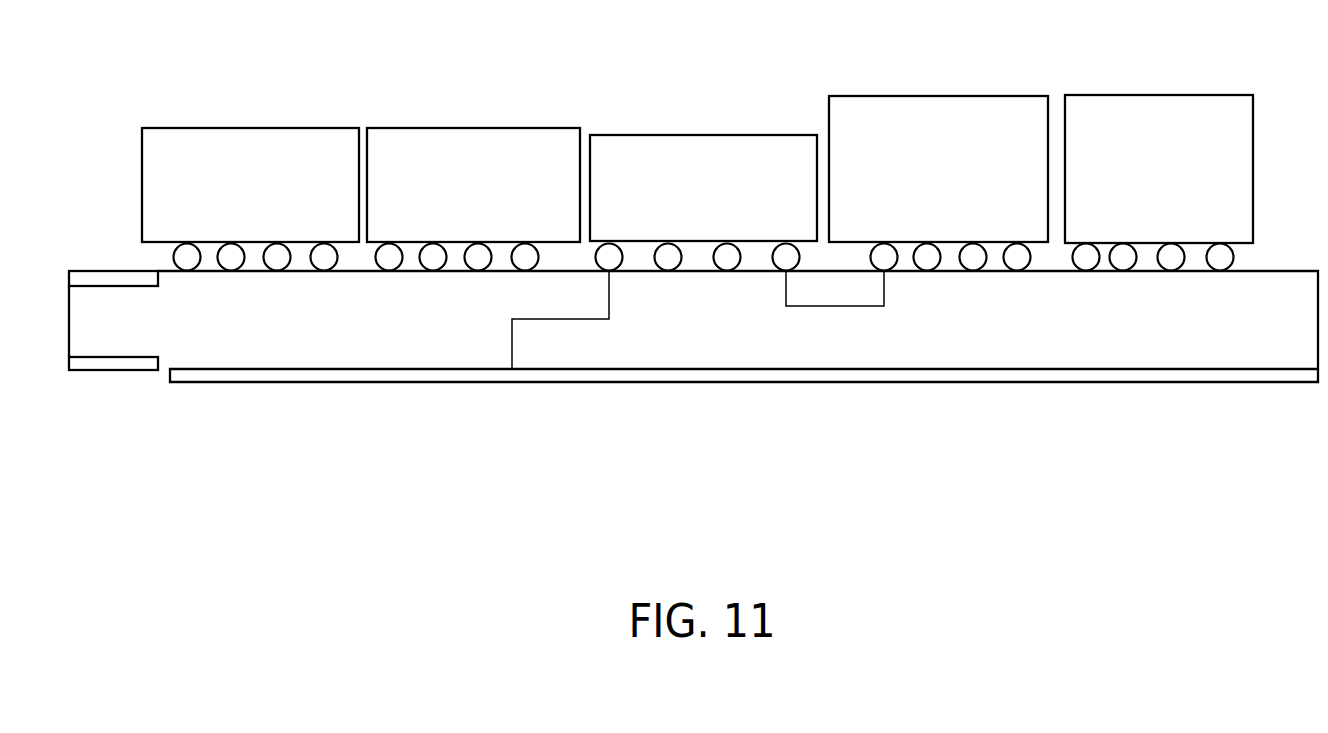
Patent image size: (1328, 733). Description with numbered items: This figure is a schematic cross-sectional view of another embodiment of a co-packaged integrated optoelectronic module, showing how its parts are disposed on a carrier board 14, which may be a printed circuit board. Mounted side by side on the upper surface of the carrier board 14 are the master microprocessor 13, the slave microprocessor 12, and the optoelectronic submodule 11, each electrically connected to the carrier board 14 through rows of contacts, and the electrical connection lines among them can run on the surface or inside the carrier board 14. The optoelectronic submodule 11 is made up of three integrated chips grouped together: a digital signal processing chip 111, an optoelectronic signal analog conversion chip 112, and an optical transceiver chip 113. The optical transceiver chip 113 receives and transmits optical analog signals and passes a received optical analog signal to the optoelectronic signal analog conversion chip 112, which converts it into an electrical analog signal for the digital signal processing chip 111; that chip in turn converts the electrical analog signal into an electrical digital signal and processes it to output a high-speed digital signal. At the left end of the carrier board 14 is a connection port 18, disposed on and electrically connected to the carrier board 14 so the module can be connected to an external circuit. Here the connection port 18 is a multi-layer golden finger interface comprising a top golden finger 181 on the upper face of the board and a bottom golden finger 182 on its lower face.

The optoelectronic submodule 11 is at (715, 88).
The digital signal processing chip 111 is at (686, 234).
The optoelectronic signal analog conversion chip 112 is at (921, 229).
The optical transceiver chip 113 is at (1178, 231).
The slave microprocessor 12 is at (460, 230).
The master microprocessor 13 is at (237, 230).
The carrier board 14 is at (1280, 370).
The connection port 18 is at (115, 378).
The top golden finger 181 is at (116, 278).
The bottom golden finger 182 is at (113, 395).